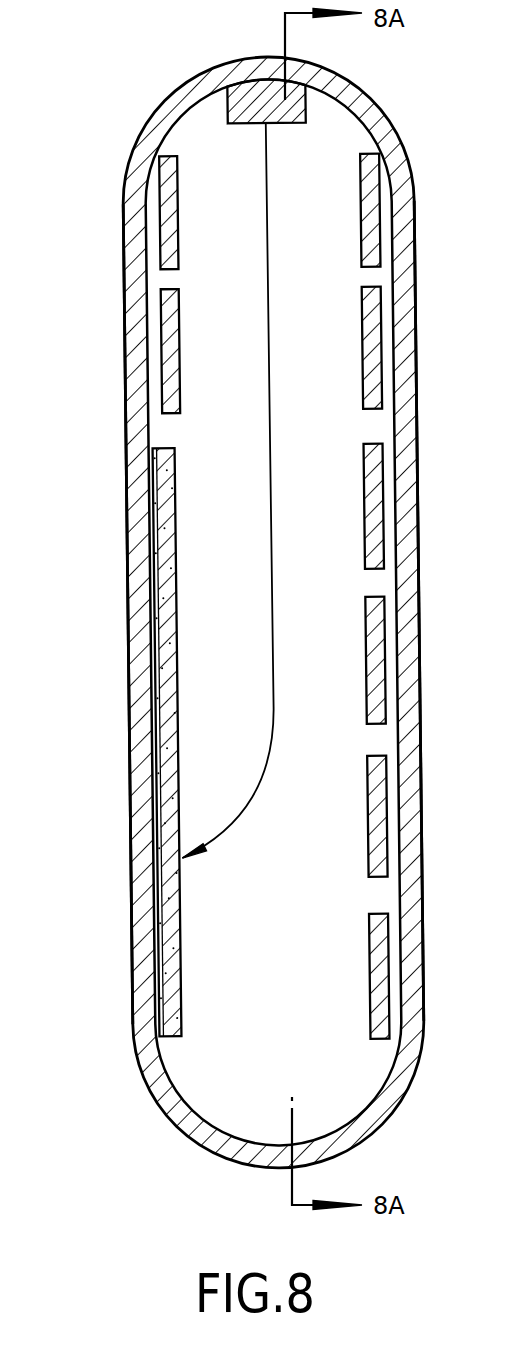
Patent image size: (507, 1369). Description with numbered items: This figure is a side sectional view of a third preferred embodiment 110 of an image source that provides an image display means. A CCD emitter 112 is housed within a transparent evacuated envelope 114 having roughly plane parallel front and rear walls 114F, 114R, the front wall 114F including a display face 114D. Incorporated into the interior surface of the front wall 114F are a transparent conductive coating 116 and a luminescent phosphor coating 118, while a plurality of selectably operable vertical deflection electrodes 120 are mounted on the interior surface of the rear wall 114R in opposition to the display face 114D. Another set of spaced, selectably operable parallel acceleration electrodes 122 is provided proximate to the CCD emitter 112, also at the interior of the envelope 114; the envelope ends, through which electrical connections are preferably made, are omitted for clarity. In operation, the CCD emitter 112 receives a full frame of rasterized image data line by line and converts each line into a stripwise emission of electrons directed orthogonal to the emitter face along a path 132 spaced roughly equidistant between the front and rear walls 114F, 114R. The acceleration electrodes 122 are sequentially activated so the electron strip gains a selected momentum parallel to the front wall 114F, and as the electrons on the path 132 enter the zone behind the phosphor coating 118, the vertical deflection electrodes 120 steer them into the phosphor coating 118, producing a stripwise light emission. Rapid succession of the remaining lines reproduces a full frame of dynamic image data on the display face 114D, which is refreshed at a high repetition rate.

The third preferred embodiment of image source 110 is at (428, 90).
The CCD emitter 112 is at (243, 112).
The transparent evacuated envelope 114 is at (122, 178).
The front wall 114F is at (124, 345).
The rear wall 114R is at (414, 330).
The display face 114D is at (127, 651).
The transparent conductive coating 116 is at (152, 482).
The luminescent phosphor coating 118 is at (163, 540).
The vertical deflection electrodes 120 is at (381, 532).
The acceleration electrodes 122 is at (161, 250).
The path 132 is at (271, 232).